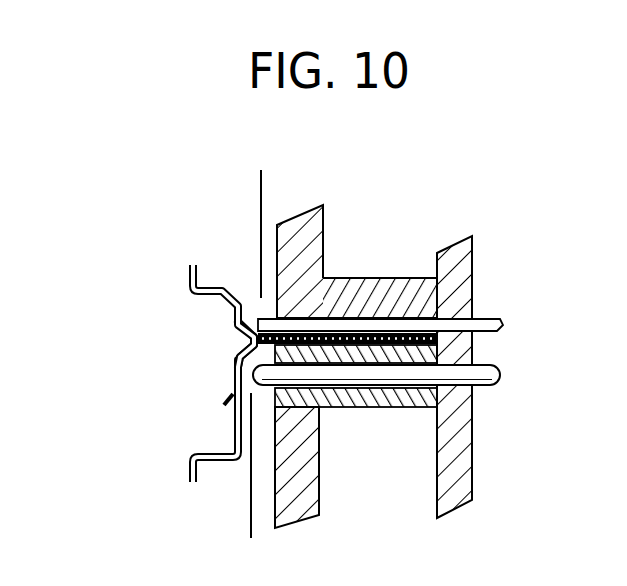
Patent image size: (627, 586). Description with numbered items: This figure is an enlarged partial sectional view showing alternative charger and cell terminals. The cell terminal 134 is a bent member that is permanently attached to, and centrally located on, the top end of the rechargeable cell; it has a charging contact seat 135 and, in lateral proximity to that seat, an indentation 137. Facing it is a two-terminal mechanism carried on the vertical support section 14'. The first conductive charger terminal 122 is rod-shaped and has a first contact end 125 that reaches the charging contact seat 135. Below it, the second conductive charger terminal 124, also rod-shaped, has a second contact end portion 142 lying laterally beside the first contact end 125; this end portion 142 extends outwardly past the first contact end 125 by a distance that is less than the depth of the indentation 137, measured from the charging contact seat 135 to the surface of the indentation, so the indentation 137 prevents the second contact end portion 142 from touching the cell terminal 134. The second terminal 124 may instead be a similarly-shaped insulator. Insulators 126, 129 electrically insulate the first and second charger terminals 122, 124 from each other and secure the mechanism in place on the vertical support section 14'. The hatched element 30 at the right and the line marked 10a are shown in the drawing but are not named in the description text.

The section line 10a is at (240, 190).
The vertical support section 14' is at (322, 484).
The panel 30 is at (448, 288).
The first conductive charger terminal 122 is at (364, 328).
The second conductive charger terminal 124 is at (483, 387).
The first contact end 125 is at (323, 207).
The insulator 126 is at (340, 293).
The insulator 129 is at (388, 400).
The cell terminal 134 is at (187, 453).
The charging contact seat 135 is at (256, 338).
The indentation 137 is at (236, 386).
The second contact end portion 142 is at (228, 400).